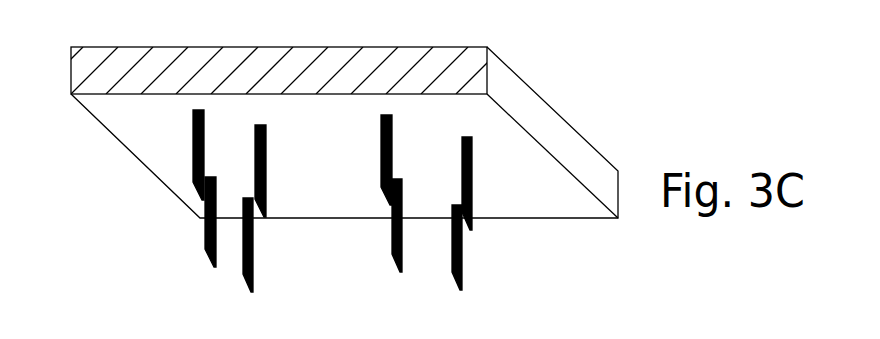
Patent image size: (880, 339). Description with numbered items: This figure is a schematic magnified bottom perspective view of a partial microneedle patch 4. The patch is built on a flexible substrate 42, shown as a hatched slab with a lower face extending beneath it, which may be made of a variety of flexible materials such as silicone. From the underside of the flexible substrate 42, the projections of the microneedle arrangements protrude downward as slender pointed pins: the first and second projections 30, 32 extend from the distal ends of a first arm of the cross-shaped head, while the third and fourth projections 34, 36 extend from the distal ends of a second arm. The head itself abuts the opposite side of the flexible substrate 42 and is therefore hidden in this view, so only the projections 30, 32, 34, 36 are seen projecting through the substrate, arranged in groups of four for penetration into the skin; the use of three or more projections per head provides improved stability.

The partial microneedle patch 4 is at (505, 84).
The flexible substrate 42 is at (553, 207).
The first projection 30 is at (200, 208).
The second projection 32 is at (268, 170).
The third projection 34 is at (193, 140).
The fourth projection 36 is at (255, 252).